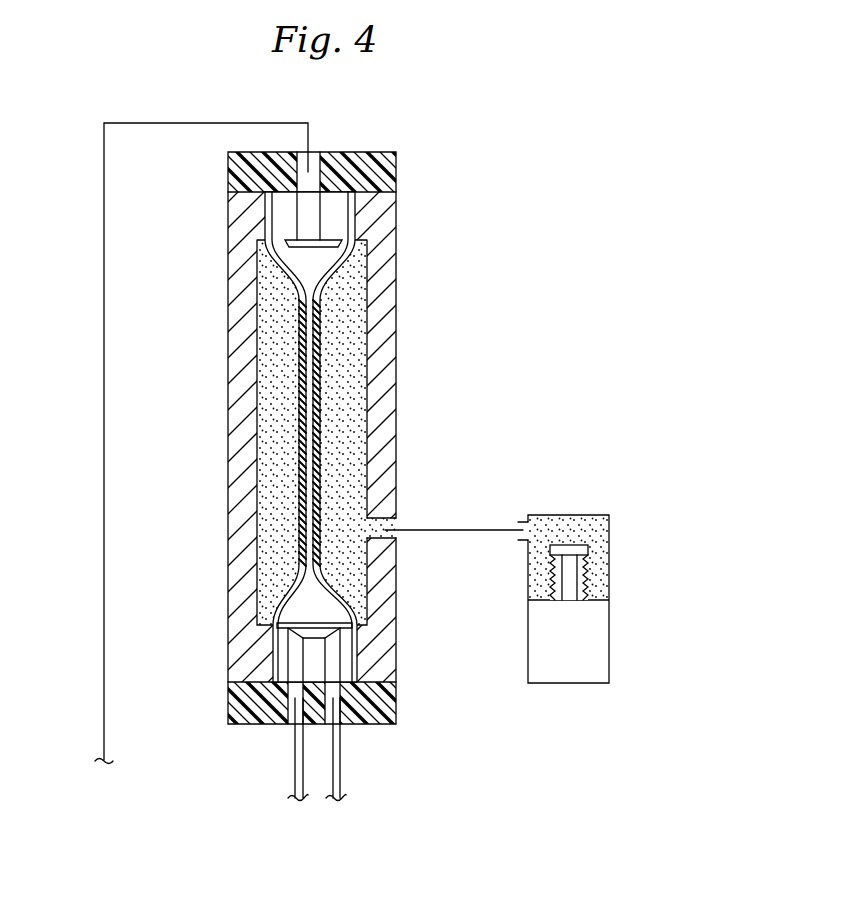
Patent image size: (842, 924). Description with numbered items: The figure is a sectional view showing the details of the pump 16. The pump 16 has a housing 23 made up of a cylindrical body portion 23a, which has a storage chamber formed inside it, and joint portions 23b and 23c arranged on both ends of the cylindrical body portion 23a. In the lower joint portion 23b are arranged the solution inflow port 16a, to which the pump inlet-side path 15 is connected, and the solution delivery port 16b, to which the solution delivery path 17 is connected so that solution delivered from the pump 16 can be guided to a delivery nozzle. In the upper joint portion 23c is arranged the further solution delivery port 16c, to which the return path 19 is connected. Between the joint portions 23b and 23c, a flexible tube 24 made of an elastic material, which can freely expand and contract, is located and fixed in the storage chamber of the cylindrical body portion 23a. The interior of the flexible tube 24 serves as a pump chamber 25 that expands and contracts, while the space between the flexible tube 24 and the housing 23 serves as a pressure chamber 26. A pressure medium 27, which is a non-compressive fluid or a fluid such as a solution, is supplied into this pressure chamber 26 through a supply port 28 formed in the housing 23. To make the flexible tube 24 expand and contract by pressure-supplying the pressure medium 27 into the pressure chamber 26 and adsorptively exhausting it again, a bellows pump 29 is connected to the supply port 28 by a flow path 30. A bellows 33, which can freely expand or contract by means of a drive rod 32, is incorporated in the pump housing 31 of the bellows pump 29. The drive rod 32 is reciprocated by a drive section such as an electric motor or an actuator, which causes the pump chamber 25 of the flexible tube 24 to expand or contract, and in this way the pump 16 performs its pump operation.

The pump inlet-side path 15 is at (295, 771).
The pump 16 is at (438, 128).
The solution inflow port 16a is at (298, 684).
The solution delivery port 16b is at (332, 688).
The solution delivery port 16c is at (305, 188).
The solution delivery path 17 is at (340, 771).
The return path 19 is at (103, 398).
The housing 23 is at (412, 298).
The cylindrical body portion 23a is at (390, 352).
The joint portion 23b is at (397, 708).
The joint portion 23c is at (393, 176).
The flexible tube 24 is at (318, 385).
The pump chamber 25 is at (305, 436).
The pressure chamber 26 is at (278, 563).
The pressure medium 27 is at (272, 502).
The supply port 28 is at (400, 518).
The bellows pump 29 is at (626, 563).
The flow path 30 is at (478, 528).
The pump housing 31 is at (583, 512).
The drive rod 32 is at (575, 595).
The bellows 33 is at (550, 577).